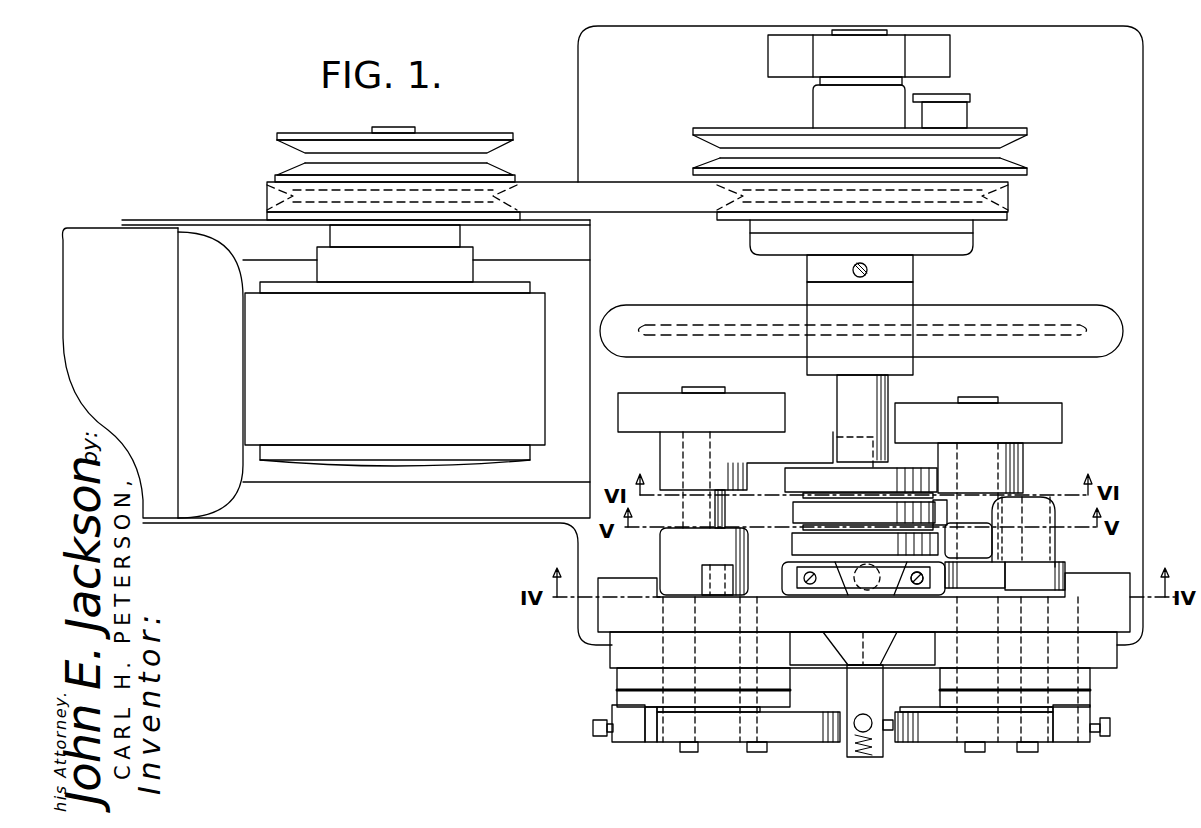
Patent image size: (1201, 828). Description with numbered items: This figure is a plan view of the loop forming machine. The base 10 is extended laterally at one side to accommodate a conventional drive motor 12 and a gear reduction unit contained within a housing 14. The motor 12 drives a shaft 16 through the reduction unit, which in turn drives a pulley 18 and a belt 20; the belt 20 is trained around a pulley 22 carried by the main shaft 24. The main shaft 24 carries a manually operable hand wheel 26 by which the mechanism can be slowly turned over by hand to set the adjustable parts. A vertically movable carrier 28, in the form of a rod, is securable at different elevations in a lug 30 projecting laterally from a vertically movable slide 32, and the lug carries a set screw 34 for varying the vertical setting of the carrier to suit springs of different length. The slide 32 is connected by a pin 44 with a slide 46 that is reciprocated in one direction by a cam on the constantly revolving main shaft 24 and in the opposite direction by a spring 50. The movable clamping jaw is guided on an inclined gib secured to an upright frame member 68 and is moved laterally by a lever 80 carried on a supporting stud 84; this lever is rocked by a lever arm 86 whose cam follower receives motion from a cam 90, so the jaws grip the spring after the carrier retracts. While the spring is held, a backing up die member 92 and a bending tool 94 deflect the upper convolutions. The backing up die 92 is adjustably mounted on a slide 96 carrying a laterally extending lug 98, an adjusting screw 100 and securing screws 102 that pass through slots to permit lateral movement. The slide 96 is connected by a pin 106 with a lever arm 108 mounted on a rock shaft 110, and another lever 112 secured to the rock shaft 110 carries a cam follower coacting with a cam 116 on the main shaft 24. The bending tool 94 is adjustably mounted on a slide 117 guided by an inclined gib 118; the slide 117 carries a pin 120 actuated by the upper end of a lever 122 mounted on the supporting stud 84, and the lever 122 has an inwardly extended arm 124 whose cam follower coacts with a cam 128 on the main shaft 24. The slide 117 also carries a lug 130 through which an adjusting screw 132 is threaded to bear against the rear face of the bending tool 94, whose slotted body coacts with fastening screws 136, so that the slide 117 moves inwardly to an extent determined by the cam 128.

The base 10 is at (578, 110).
The drive motor 12 is at (156, 380).
The housing 14 is at (398, 380).
The shaft 16 is at (398, 128).
The pulley 18 is at (278, 180).
The belt 20 is at (613, 190).
The pulley 22 is at (730, 131).
The main shaft 24 is at (878, 390).
The hand wheel 26 is at (710, 310).
The carrier 28 is at (857, 732).
The lug 30 is at (850, 685).
The slide 32 is at (872, 655).
The set screw 34 is at (860, 760).
The pin 44 is at (885, 650).
The slide 46 is at (835, 592).
The spring 50 is at (880, 600).
The upright frame member 68 is at (608, 617).
The lever 80 is at (985, 593).
The supporting stud 84 is at (998, 397).
The lever arm 86 is at (946, 546).
The cam 90 is at (805, 545).
The backing up die member 92 is at (726, 742).
The bending tool 94 is at (1000, 742).
The slide 96 is at (623, 683).
The lug 98 is at (625, 742).
The adjusting screw 100 is at (592, 730).
The securing screws 102 is at (755, 753).
The pin 106 is at (715, 565).
The lever arm 108 is at (698, 582).
The rock shaft 110 is at (690, 388).
The lever 112 is at (772, 446).
The cam 116 is at (830, 478).
The slide 117 is at (1075, 687).
The inclined gib 118 is at (1103, 650).
The pin 120 is at (1045, 562).
The lever 122 is at (1027, 513).
The arm 124 is at (940, 505).
The cam 128 is at (797, 508).
The lug 130 is at (1085, 742).
The adjusting screw 132 is at (1110, 728).
The fastening screws 136 is at (1027, 753).